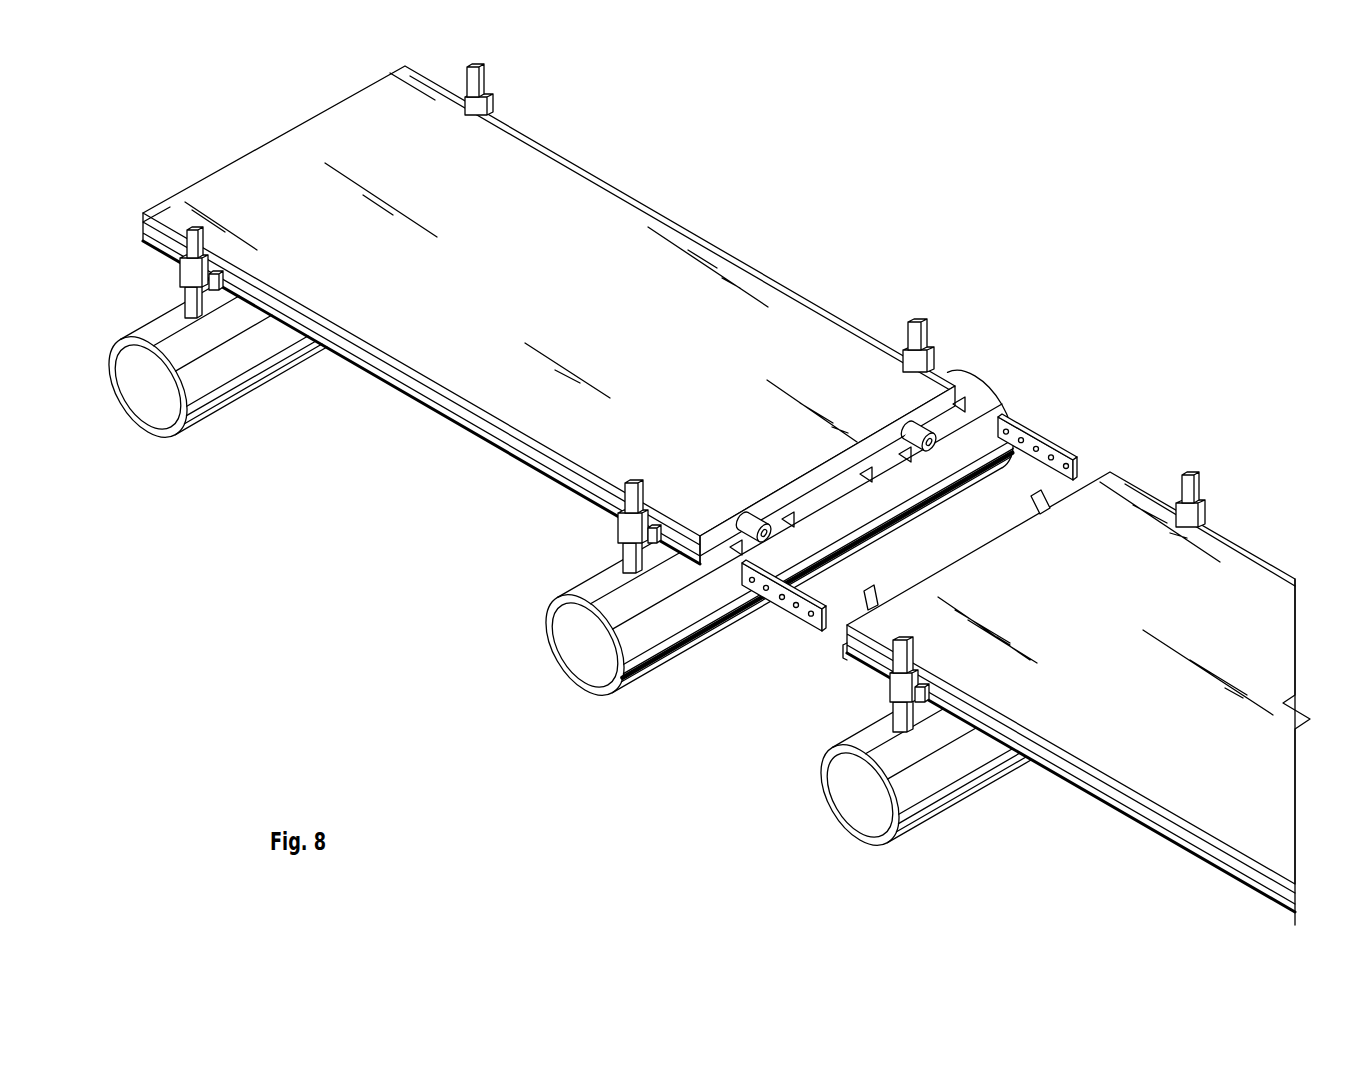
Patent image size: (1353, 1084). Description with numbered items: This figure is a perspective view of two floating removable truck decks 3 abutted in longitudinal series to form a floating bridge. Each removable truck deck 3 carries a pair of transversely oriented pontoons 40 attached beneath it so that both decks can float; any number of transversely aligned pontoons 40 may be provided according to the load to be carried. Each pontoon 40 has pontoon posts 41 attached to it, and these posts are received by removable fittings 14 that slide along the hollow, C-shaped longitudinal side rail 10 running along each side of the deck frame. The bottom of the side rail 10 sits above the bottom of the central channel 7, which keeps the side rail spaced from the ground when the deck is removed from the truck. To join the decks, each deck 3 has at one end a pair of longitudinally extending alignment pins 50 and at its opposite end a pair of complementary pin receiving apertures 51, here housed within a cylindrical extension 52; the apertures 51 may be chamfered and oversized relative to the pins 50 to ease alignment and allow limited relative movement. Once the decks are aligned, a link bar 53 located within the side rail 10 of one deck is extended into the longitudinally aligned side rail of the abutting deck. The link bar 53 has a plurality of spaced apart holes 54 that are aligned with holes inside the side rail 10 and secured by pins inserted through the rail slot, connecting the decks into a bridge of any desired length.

The removable truck deck 3 is at (303, 139).
The central channel 7 is at (871, 475).
The longitudinal side rail 10 is at (145, 234).
The removable fitting 14 is at (172, 268).
The pontoon 40 is at (154, 412).
The pontoon post 41 is at (197, 232).
The alignment pin 50 is at (1032, 498).
The pin receiving aperture 51 is at (930, 438).
The cylindrical extension 52 is at (912, 432).
The link bar 53 is at (747, 590).
The spaced apart holes 54 is at (790, 606).